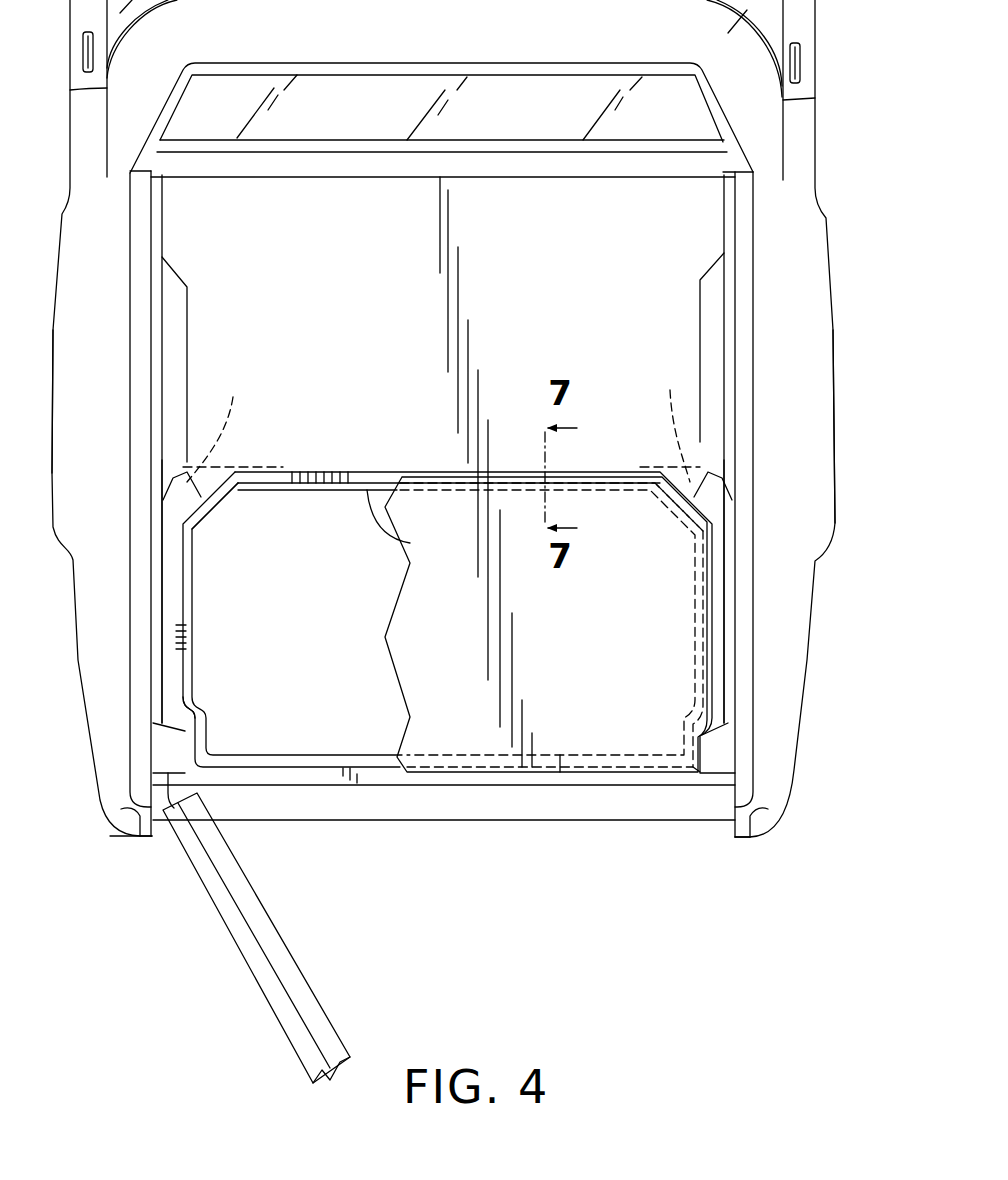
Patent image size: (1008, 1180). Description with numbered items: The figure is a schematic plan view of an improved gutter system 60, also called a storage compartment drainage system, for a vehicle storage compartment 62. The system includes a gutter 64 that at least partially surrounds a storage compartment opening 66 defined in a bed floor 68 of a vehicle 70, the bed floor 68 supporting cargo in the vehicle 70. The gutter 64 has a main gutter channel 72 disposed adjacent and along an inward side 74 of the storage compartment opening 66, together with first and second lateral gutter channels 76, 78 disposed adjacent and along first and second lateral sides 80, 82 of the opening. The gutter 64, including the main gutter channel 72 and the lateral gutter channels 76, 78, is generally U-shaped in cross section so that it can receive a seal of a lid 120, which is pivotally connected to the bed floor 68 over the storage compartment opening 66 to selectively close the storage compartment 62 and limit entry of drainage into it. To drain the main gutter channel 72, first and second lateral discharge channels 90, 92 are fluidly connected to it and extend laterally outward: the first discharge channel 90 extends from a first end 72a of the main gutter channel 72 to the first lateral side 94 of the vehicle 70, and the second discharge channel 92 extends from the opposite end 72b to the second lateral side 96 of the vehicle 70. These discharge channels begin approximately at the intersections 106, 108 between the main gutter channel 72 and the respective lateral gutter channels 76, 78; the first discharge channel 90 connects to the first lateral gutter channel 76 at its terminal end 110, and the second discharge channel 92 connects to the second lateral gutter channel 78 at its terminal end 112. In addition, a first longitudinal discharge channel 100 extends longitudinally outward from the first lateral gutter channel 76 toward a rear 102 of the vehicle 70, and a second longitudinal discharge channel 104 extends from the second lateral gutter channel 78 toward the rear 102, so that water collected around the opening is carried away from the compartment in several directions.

The improved gutter system 60 is at (447, 570).
The vehicle storage compartment 62 is at (370, 717).
The gutter 64 is at (297, 468).
The storage compartment opening 66 is at (293, 730).
The bed floor 68 is at (361, 284).
The vehicle 70 is at (828, 160).
The main gutter channel 72 is at (345, 487).
The first end of main gutter channel 72a is at (205, 500).
The opposite end of main gutter channel 72b is at (663, 480).
The inward side of storage compartment opening 74 is at (412, 544).
The first lateral gutter channel 76 is at (180, 612).
The second lateral gutter channel 78 is at (710, 611).
The first lateral side of storage compartment opening 80 is at (193, 620).
The second lateral side of storage compartment opening 82 is at (693, 583).
The first lateral discharge channel 90 is at (216, 424).
The second lateral discharge channel 92 is at (670, 421).
The first lateral side of vehicle 94 is at (83, 517).
The second lateral side of vehicle 96 is at (811, 505).
The first longitudinal discharge channel 100 is at (191, 757).
The rear of vehicle 102 is at (440, 787).
The second longitudinal discharge channel 104 is at (696, 773).
The intersection 106 is at (193, 496).
The intersection 108 is at (705, 490).
The terminal end of first lateral gutter channel 110 is at (220, 474).
The terminal end of second lateral gutter channel 112 is at (665, 484).
The lid 120 is at (564, 721).